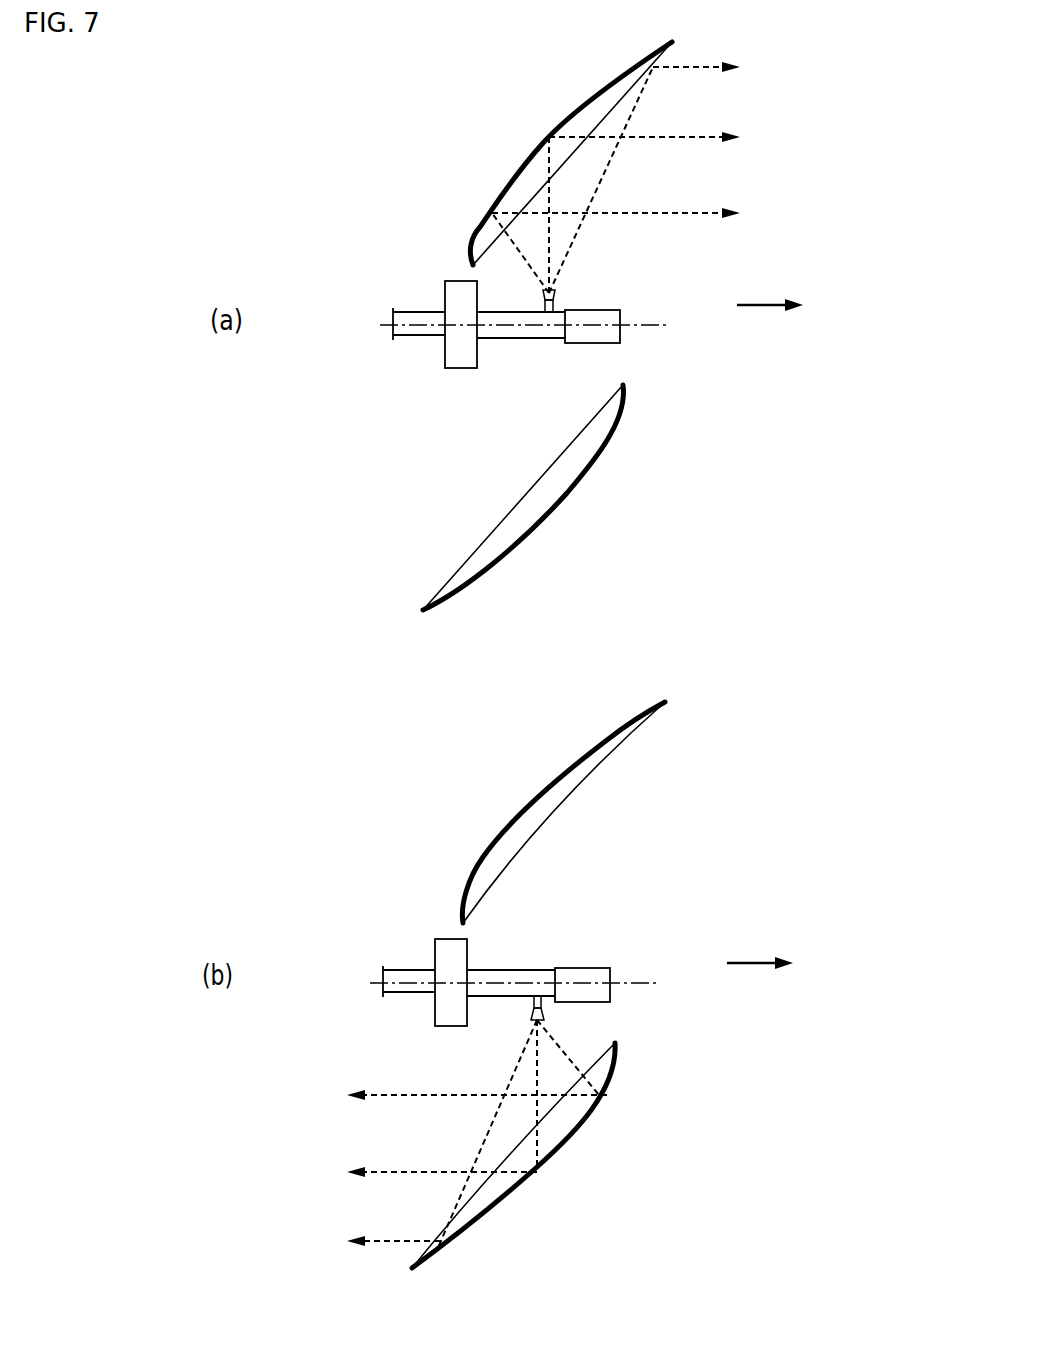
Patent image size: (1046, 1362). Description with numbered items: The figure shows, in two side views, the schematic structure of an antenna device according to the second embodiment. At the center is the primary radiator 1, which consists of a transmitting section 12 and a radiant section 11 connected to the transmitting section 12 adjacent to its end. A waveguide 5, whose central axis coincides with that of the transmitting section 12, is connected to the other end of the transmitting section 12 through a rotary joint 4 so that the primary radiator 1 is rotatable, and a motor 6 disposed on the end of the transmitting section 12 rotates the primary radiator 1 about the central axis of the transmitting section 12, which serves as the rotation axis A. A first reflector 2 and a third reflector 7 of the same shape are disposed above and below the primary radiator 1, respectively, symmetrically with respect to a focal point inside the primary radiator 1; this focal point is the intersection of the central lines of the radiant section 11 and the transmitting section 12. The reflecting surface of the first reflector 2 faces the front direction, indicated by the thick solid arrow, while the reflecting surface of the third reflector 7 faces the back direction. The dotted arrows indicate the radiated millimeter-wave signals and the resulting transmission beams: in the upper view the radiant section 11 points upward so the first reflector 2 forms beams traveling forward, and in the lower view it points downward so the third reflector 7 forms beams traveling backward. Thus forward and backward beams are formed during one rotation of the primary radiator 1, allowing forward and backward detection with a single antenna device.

The primary radiator 1 is at (580, 280).
The first reflector 2 is at (515, 170).
The rotary joint 4 is at (454, 365).
The waveguide 5 is at (423, 312).
The motor 6 is at (620, 317).
The third reflector 7 is at (617, 437).
The radiant section 11 is at (556, 297).
The transmitting section 12 is at (512, 312).
The rotation axis A is at (528, 653).